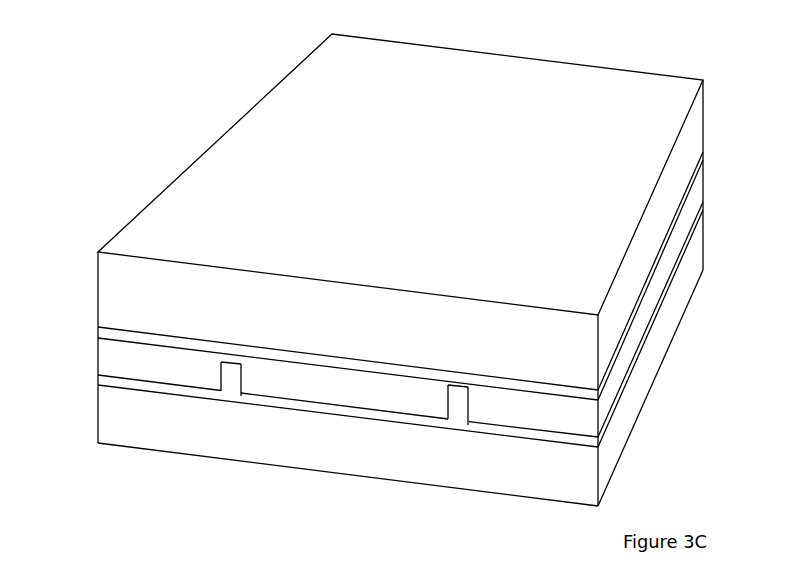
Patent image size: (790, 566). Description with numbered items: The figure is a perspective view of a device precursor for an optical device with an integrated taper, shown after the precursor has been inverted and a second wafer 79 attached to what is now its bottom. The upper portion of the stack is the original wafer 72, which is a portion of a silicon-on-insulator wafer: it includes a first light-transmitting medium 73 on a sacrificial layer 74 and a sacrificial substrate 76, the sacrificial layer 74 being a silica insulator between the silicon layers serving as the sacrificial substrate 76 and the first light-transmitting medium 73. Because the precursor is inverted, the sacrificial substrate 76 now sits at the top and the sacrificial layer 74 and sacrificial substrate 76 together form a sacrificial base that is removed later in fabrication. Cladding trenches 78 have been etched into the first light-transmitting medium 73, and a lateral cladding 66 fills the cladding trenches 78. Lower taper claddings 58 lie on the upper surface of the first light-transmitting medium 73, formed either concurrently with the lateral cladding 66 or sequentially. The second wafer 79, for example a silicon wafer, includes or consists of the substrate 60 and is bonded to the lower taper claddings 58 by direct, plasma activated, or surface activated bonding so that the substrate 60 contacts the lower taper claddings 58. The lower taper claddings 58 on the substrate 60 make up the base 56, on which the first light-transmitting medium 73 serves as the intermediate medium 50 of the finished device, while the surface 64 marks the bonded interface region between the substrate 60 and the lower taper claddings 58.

The intermediate medium 50 is at (148, 352).
The base 56 is at (710, 152).
The lower taper cladding 58 is at (367, 415).
The substrate 60 is at (318, 437).
The surface 64 is at (299, 414).
The lateral cladding 66 is at (232, 375).
The wafer 72 is at (85, 252).
The first light-transmitting medium 73 is at (327, 375).
The sacrificial layer 74 is at (416, 372).
The sacrificial substrate 76 is at (330, 298).
The cladding trench 78 is at (221, 362).
The second wafer 79 is at (72, 434).